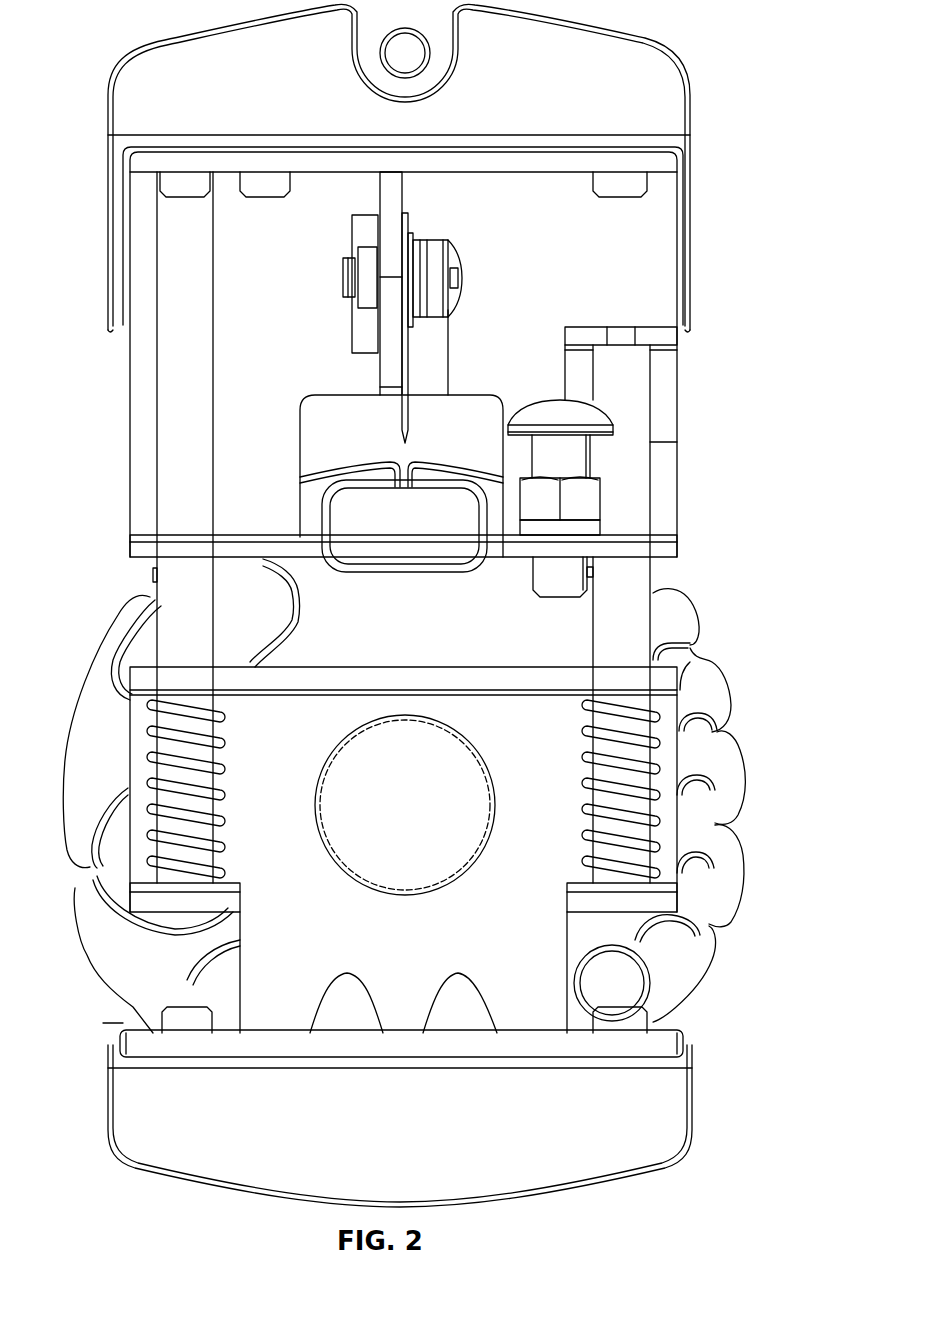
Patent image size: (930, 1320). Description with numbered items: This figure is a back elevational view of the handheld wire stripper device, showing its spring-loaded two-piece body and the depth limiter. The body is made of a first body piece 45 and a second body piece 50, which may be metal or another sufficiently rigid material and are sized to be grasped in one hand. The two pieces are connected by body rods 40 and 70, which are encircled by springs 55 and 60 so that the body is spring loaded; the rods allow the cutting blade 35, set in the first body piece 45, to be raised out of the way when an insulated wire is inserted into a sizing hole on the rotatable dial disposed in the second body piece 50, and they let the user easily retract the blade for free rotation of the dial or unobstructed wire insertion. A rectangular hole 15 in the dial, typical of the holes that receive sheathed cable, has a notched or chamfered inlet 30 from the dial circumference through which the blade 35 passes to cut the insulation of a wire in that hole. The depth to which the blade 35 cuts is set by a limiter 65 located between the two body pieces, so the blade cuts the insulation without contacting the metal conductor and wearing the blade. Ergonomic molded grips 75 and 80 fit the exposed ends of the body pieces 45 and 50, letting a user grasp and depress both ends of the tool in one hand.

The hole 15 is at (408, 563).
The notched inlet 30 is at (408, 482).
The cutting blade 35 is at (400, 408).
The body rod 40 is at (200, 605).
The first body piece 45 is at (512, 283).
The second body piece 50 is at (660, 1038).
The spring 55 is at (217, 758).
The spring 60 is at (585, 749).
The limiter 65 is at (547, 580).
The body rod 70 is at (635, 580).
The grip 75 is at (672, 93).
The grip 80 is at (580, 1110).